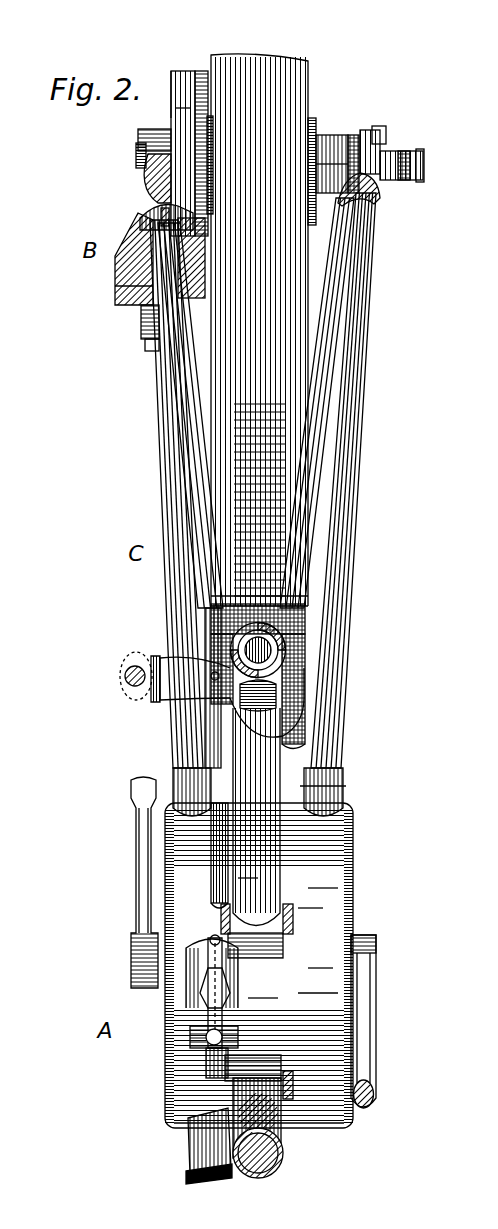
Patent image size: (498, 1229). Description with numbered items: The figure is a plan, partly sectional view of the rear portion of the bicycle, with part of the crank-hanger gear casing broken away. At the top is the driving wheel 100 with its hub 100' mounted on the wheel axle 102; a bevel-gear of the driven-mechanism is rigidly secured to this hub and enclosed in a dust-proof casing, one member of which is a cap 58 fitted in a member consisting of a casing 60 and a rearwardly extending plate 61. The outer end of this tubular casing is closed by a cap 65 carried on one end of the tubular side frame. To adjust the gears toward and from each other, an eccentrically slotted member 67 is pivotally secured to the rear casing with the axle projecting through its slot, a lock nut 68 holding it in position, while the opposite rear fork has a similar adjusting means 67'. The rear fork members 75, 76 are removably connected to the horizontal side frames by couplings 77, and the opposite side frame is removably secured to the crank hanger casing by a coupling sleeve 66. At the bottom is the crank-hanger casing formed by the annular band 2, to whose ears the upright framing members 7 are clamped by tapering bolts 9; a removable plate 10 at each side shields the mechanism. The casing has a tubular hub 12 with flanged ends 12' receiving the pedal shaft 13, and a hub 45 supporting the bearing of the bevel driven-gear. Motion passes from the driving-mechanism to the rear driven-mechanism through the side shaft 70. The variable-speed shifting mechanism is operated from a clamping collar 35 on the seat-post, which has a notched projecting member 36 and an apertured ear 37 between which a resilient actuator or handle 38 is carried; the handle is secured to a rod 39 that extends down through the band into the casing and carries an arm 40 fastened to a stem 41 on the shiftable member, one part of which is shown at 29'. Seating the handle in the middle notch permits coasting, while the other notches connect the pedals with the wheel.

The annular member or band 2 is at (308, 1126).
The upright framing members 7 is at (270, 883).
The tapering bolts or pins 9 is at (279, 911).
The removable plate 10 is at (340, 891).
The tubular hub 12 is at (239, 991).
The flanged ends 12' is at (173, 993).
The pedal shaft 13 is at (124, 955).
The part of shiftable member 29' is at (172, 1070).
The clamping collar 35 is at (215, 715).
The notched projecting member 36 is at (157, 652).
The apertured ear 37 is at (195, 692).
The actuator or handle 38 is at (127, 676).
The rod 39 is at (205, 747).
The arm 40 is at (185, 938).
The projection or stem 41 is at (185, 1031).
The hub 45 is at (196, 1126).
The cap 58 is at (193, 76).
The casing 60 is at (107, 276).
The rearwardly extending plate 61 is at (164, 99).
The cap 65 is at (118, 298).
The coupling sleeve 66 is at (337, 779).
The eccentrically slotted member 67 is at (131, 138).
The adjusting means 67' is at (392, 140).
The lock nut 68 is at (128, 153).
The side shaft 70 is at (216, 1060).
The rear fork member 75 is at (172, 346).
The rear fork member 76 is at (350, 264).
The couplings 77 is at (140, 212).
The driving wheel 100 is at (283, 330).
The hub of driving wheel 100' is at (337, 149).
The wheel axle 102 is at (130, 162).